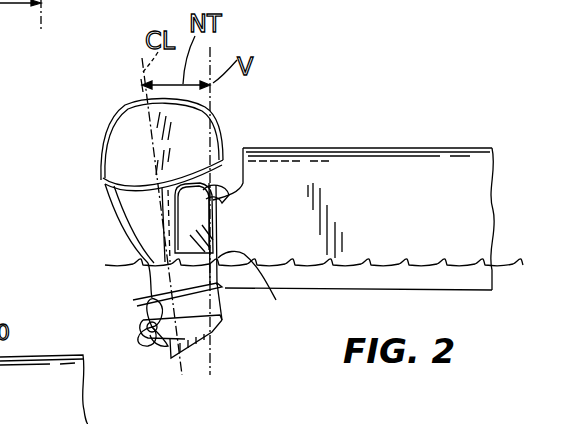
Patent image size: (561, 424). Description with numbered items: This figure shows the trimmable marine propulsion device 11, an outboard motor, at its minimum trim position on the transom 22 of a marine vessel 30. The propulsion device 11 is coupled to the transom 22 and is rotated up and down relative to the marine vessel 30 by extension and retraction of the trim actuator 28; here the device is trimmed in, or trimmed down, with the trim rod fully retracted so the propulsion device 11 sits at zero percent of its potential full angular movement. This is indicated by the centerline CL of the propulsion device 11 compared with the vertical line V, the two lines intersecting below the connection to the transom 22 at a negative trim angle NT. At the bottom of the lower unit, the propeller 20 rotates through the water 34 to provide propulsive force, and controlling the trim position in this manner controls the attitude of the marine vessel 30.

The marine propulsion device 11 is at (101, 153).
The propeller 20 is at (143, 326).
The transom 22 is at (223, 265).
The trim actuator 28 is at (215, 242).
The marine vessel 30 is at (380, 148).
The water 34 is at (443, 267).